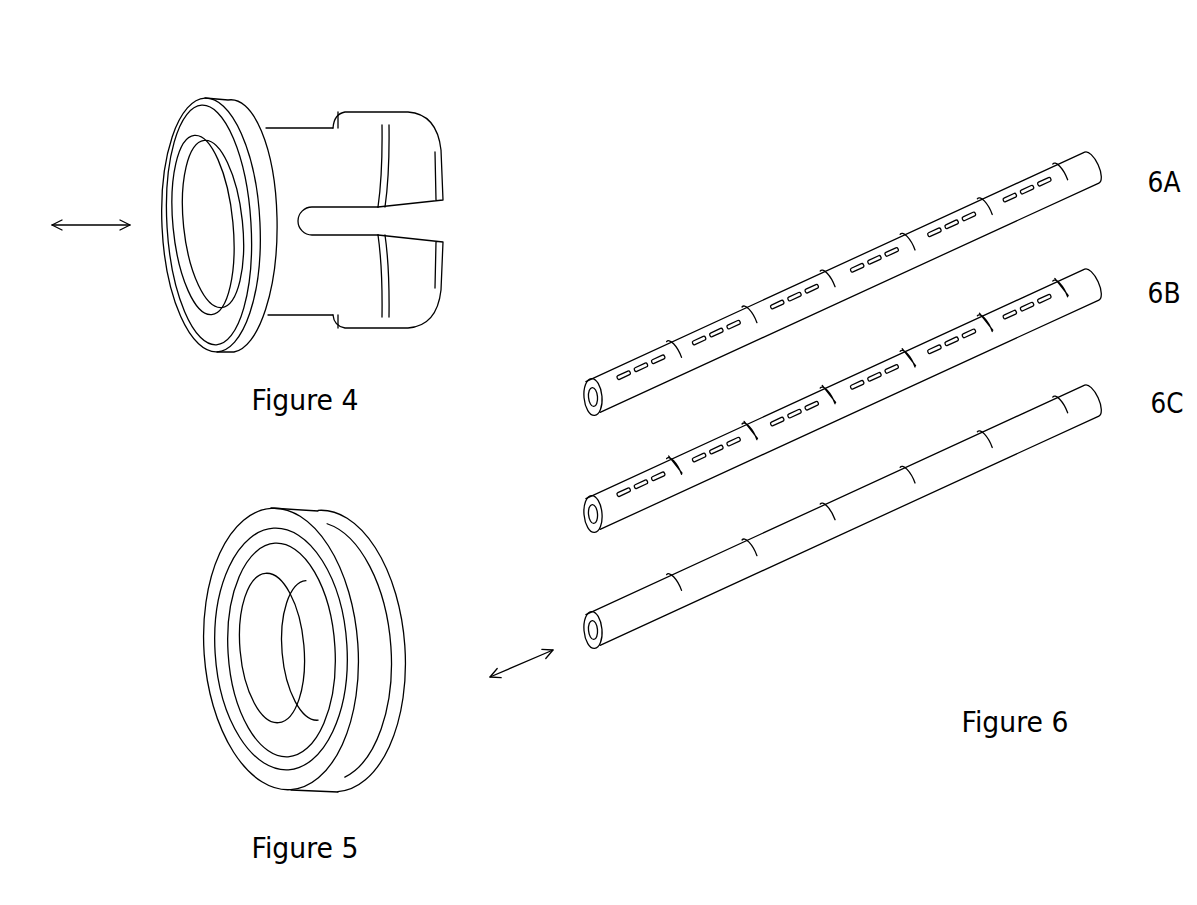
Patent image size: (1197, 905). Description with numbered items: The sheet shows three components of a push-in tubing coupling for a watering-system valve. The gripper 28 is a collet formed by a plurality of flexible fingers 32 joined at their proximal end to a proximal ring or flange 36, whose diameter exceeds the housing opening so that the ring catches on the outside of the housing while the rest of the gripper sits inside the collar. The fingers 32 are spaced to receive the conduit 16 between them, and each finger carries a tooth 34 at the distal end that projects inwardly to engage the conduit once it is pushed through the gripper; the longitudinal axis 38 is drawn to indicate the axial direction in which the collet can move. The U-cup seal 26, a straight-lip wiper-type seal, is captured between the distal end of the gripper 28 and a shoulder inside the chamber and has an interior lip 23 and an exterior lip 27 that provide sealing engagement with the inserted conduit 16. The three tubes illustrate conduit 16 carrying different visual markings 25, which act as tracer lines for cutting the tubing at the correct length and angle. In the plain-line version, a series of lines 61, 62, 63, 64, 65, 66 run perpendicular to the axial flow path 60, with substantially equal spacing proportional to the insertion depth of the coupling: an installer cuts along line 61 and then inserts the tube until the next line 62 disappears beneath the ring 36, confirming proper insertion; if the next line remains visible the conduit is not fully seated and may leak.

In FIG. 4, the gripper 28 is at (500, 106).
In FIG. 4, the flexible fingers 32 is at (325, 278).
In FIG. 4, the tooth 34 is at (408, 290).
In FIG. 4, the proximal ring 36 is at (233, 103).
In FIG. 4, the axis 38 is at (91, 247).
In FIG. 5, the U-cup seal 26 is at (173, 552).
In FIG. 5, the exterior lip 27 is at (213, 633).
In FIG. 5, the interior lip 23 is at (263, 719).
In FIG. 6, the markings 25 is at (940, 196).
In FIG. 6, the conduit 16 is at (608, 383).
In FIG. 6, the axial longitudinal flow path 60 is at (521, 680).
In FIG. 6, the line 61 is at (1078, 445).
In FIG. 6, the line 62 is at (1008, 475).
In FIG. 6, the line 63 is at (923, 522).
In FIG. 6, the line 64 is at (840, 552).
In FIG. 6, the line 65 is at (767, 582).
In FIG. 6, the line 66 is at (688, 622).